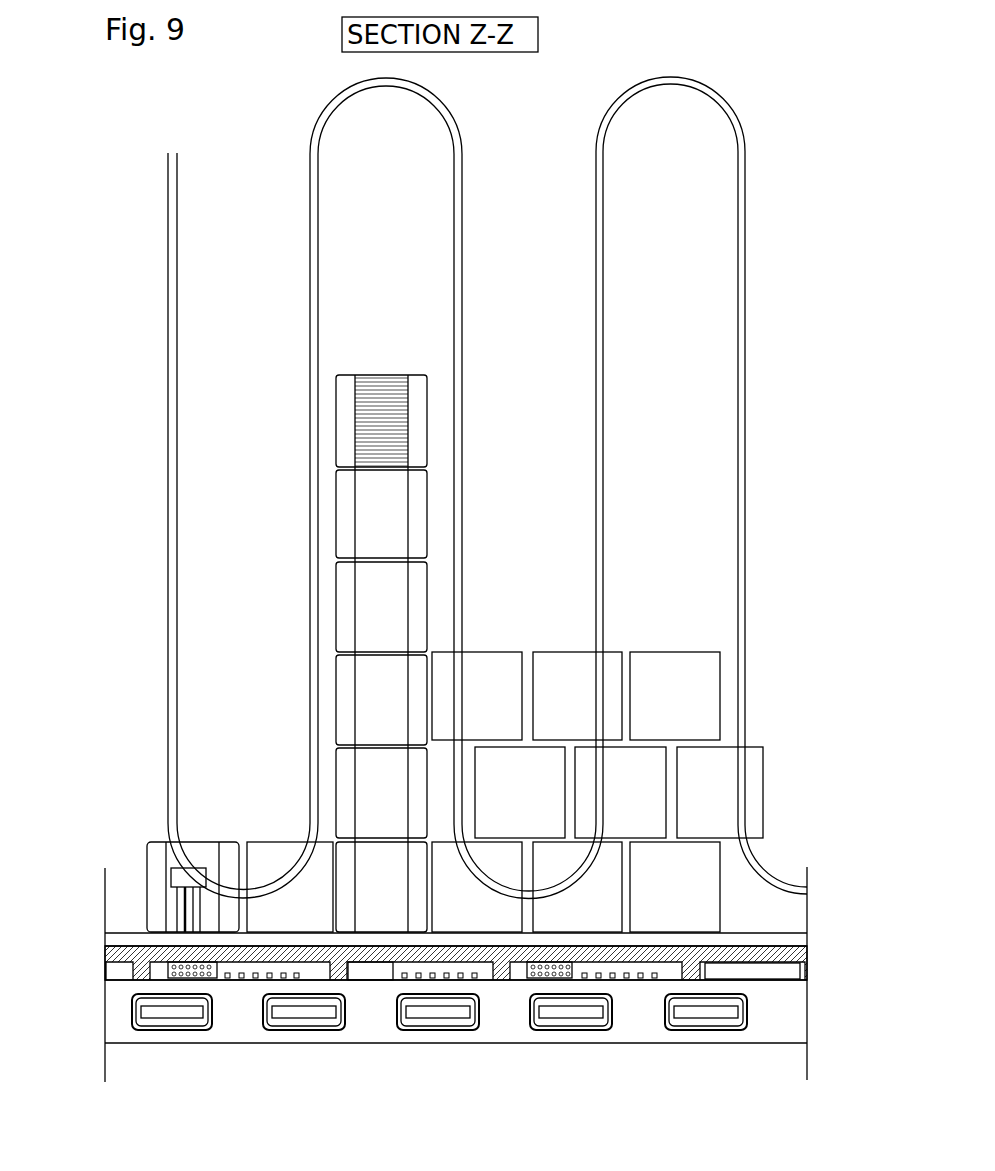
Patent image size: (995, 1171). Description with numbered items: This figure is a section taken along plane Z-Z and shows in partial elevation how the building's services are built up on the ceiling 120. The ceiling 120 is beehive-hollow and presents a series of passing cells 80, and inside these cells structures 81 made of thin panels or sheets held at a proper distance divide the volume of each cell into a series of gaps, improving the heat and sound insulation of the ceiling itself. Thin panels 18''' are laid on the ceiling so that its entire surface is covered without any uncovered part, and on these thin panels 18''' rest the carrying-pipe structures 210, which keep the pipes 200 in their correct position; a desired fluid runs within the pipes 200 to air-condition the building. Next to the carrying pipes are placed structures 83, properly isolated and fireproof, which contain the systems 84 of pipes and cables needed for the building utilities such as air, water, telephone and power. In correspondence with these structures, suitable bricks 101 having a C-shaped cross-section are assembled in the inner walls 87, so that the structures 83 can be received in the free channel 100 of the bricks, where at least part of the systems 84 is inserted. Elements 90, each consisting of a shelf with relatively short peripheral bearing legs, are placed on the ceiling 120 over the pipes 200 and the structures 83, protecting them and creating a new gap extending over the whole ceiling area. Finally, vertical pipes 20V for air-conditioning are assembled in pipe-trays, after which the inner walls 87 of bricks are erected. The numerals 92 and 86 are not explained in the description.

The vertical pipes 20V is at (743, 382).
The bricks 101 is at (440, 504).
The free channel 100 is at (373, 518).
The inner walls 87 is at (652, 662).
The end block with component 92 is at (137, 952).
The elements 90 is at (771, 940).
The bonding layer 86 is at (244, 947).
The thin panels 18''' is at (466, 820).
The pipes 200 is at (228, 978).
The carrying-pipe structures 210 is at (295, 978).
The structures 83 is at (374, 973).
The systems of pipes and cables 84 is at (539, 975).
The ceiling 120 is at (118, 1023).
The structures 81 is at (147, 1022).
The passing cells 80 is at (710, 1028).